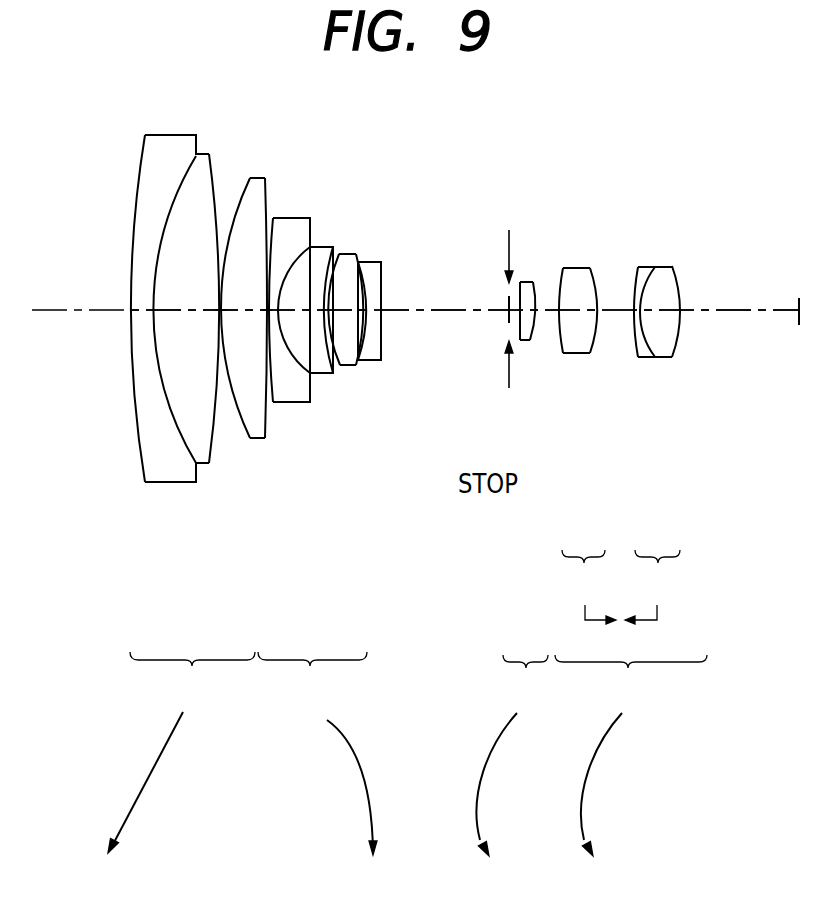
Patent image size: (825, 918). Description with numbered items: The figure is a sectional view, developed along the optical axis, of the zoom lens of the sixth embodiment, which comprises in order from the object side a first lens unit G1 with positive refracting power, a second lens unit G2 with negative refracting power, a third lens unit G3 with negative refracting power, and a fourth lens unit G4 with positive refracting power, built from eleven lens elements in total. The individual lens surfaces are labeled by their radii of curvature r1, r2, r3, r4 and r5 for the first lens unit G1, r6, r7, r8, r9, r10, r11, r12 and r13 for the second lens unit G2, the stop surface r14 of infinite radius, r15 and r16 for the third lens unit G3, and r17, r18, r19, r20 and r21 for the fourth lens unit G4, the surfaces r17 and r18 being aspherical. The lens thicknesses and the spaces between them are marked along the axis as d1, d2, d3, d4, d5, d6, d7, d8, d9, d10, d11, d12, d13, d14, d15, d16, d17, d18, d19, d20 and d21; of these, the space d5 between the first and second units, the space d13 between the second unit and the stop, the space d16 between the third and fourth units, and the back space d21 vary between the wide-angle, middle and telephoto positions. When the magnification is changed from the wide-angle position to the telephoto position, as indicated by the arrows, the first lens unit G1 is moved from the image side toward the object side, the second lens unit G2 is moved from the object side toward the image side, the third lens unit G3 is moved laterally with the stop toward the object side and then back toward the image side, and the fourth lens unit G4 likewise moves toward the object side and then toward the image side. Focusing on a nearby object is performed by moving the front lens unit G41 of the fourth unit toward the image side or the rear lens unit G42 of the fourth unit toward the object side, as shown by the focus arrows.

The first lens surface radius of curvature r1 is at (144, 150).
The second lens surface radius of curvature r2 is at (189, 170).
The third lens surface radius of curvature r3 is at (213, 158).
The fourth lens surface radius of curvature r4 is at (242, 207).
The fifth lens surface radius of curvature r5 is at (268, 188).
The sixth lens surface radius of curvature r6 is at (275, 222).
The seventh lens surface radius of curvature r7 is at (300, 218).
The eighth lens surface radius of curvature r8 is at (326, 250).
The ninth lens surface radius of curvature r9 is at (341, 256).
The tenth lens surface radius of curvature r10 is at (356, 257).
The eleventh lens surface radius of curvature r11 is at (361, 266).
The twelfth lens surface radius of curvature r12 is at (372, 277).
The thirteenth lens surface radius of curvature r13 is at (382, 290).
The stop surface r14 is at (508, 243).
The fifteenth lens surface radius of curvature r15 is at (520, 282).
The sixteenth lens surface radius of curvature r16 is at (533, 283).
The seventeenth lens surface radius of curvature r17 is at (561, 290).
The eighteenth lens surface radius of curvature r18 is at (592, 283).
The nineteenth lens surface radius of curvature r19 is at (636, 285).
The twentieth lens surface radius of curvature r20 is at (649, 283).
The twenty-first lens surface radius of curvature r21 is at (677, 287).
The first lens thickness d1 is at (147, 312).
The second lens thickness d2 is at (184, 312).
The third axial space d3 is at (220, 312).
The fourth lens thickness d4 is at (240, 312).
The fifth axial space d5 is at (267, 312).
The sixth lens thickness d6 is at (275, 312).
The seventh axial space d7 is at (299, 312).
The eighth lens thickness d8 is at (326, 312).
The ninth axial space d9 is at (345, 312).
The tenth lens thickness d10 is at (364, 312).
The eleventh axial space d11 is at (373, 312).
The twelfth lens thickness d12 is at (386, 312).
The thirteenth axial space d13 is at (470, 312).
The fourteenth axial space d14 is at (513, 330).
The fifteenth lens thickness d15 is at (524, 312).
The sixteenth axial space d16 is at (545, 312).
The seventeenth lens thickness d17 is at (576, 318).
The eighteenth axial space d18 is at (612, 312).
The nineteenth lens thickness d19 is at (637, 318).
The twentieth lens thickness d20 is at (660, 316).
The twenty-first axial space d21 is at (745, 313).
The first lens unit G1 is at (181, 752).
The second lens unit G2 is at (317, 753).
The third lens unit G3 is at (512, 755).
The fourth lens unit G4 is at (631, 755).
The front lens unit of the fourth lens unit G41 is at (580, 603).
The rear lens unit of the fourth lens unit G42 is at (667, 603).